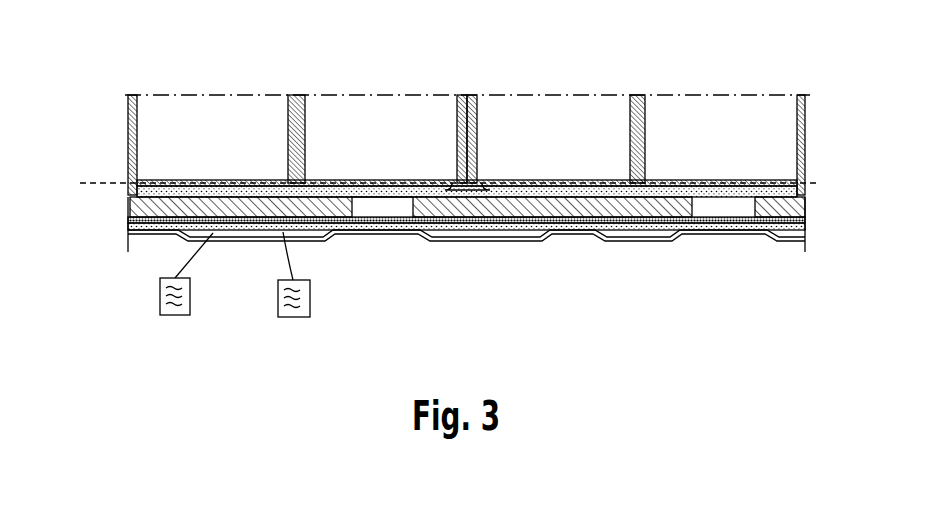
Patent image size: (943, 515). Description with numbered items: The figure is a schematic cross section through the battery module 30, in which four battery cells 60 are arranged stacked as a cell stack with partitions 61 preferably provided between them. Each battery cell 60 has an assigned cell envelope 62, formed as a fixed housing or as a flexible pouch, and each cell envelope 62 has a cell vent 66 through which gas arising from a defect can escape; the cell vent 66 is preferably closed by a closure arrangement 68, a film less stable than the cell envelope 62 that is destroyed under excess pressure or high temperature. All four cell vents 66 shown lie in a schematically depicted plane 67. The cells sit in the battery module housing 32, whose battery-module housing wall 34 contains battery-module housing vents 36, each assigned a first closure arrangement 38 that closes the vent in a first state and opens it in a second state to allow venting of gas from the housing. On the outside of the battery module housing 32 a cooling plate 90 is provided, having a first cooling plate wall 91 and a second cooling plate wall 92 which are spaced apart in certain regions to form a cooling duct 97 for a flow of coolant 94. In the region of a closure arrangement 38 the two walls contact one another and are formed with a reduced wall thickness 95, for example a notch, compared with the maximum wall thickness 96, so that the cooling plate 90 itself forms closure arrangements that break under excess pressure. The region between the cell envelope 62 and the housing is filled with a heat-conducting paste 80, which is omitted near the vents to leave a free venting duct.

The battery module 30 is at (269, 41).
The battery module housing 32 is at (466, 273).
The battery-module housing wall 34 is at (466, 270).
The battery-module housing vent 36 is at (467, 282).
The first closure arrangement 38 is at (382, 265).
The battery cell 60 is at (464, 135).
The partition 61 is at (466, 110).
The cell envelope 62 is at (478, 107).
The cell vent 66 is at (467, 141).
The plane 67 is at (440, 148).
The closure arrangement 68 is at (467, 150).
The heat-conducting paste 80 is at (286, 308).
The cooling plate 90 is at (478, 297).
The first cooling plate wall 91 is at (513, 291).
The second cooling plate wall 92 is at (549, 286).
The coolant 94 is at (176, 307).
The reduced wall thickness 95 is at (370, 273).
The maximum wall thickness 96 is at (241, 293).
The cooling duct 97 is at (455, 272).